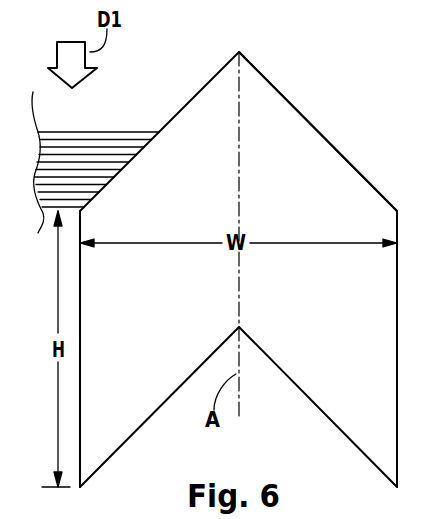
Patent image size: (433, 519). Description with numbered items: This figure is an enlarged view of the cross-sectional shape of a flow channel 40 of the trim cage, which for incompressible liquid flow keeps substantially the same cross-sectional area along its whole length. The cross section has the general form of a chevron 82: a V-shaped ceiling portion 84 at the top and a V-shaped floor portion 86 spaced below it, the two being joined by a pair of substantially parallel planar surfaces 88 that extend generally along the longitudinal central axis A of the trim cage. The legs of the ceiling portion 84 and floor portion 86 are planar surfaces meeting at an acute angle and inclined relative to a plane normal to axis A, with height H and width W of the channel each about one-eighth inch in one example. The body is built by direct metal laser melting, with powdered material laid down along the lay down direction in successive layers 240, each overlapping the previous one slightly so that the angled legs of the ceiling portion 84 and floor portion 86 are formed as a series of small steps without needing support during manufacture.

The flow channel 40 is at (216, 263).
The layers 240 is at (103, 131).
The ceiling portion 84 is at (283, 97).
The chevron 82 is at (349, 160).
The planar surfaces 88 is at (81, 357).
The floor portion 86 is at (326, 416).